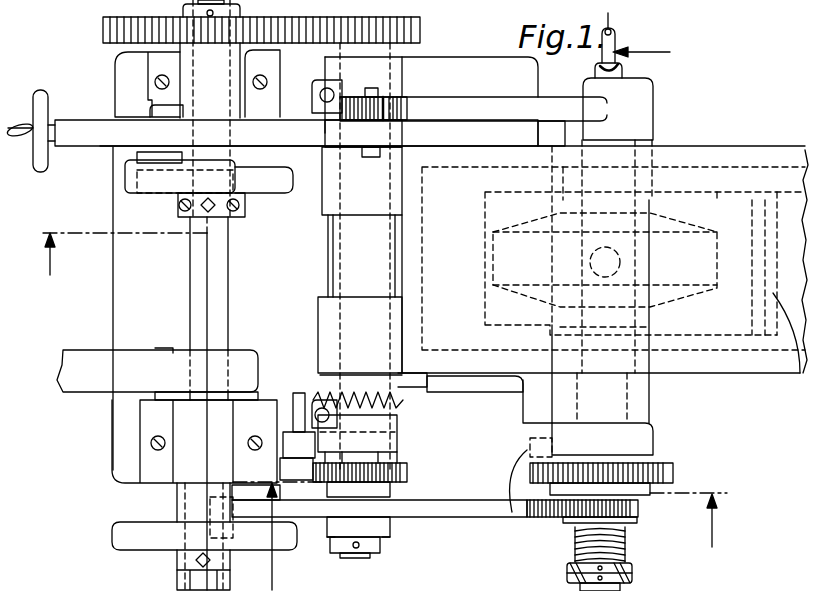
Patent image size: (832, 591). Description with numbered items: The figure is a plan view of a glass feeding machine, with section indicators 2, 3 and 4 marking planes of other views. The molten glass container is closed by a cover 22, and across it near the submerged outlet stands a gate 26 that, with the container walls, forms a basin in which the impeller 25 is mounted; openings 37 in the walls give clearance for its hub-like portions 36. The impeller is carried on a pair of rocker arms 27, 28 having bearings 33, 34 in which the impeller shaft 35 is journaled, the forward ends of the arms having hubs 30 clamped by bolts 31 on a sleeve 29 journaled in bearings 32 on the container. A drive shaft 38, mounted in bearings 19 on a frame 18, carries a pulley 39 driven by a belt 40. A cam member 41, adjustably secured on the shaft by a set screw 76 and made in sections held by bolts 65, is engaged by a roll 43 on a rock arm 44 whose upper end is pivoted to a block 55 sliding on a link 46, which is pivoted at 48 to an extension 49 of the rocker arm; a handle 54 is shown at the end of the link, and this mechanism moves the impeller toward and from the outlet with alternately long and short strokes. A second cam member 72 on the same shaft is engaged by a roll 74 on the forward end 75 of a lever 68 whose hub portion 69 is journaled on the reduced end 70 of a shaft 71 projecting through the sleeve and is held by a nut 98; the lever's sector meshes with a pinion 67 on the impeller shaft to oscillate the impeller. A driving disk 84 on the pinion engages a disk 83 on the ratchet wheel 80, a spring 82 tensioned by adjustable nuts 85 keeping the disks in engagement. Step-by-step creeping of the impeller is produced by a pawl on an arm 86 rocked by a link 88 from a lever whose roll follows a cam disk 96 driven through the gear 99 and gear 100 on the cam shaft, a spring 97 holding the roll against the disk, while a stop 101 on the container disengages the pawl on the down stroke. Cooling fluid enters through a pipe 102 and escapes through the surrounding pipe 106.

The section line 2 is at (115, 242).
The section line 3 is at (646, 43).
The section line 4 is at (483, 536).
The frame 18 is at (113, 293).
The bearings 19 is at (187, 62).
The cover 22 is at (752, 375).
The impeller 25 is at (687, 223).
The gate 26 is at (800, 375).
The rocker arm 27 is at (513, 97).
The rocker arm 28 is at (453, 391).
The sleeve 29 is at (327, 65).
The hubs 30 is at (402, 72).
The bolts 31 is at (320, 97).
The bearings 32 is at (322, 202).
The bearing 33 is at (655, 100).
The bearing 34 is at (649, 402).
The shaft 35 is at (640, 157).
The hub-like portions 36 is at (653, 163).
The openings 37 is at (665, 180).
The shaft 38 is at (190, 297).
The pulley 39 is at (170, 348).
The belt 40 is at (140, 350).
The cam member 41 is at (245, 210).
The roll 43 is at (150, 170).
The rock arm 44 is at (150, 110).
The link 46 is at (292, 146).
The pivot 48 is at (380, 160).
The extension 49 is at (403, 95).
The handle 54 is at (38, 167).
The block 55 is at (110, 150).
The bolts 65 is at (180, 207).
The pinion 67 is at (625, 508).
The lever 68 is at (485, 517).
The hub portion 69 is at (390, 537).
The reduced end 70 is at (370, 527).
The shaft 71 is at (340, 257).
The cam member 72 is at (113, 528).
The roll 74 is at (208, 523).
The forward end 75 is at (312, 518).
The set screw 76 is at (207, 212).
The ratchet wheel 80 is at (673, 472).
The spring 82 is at (625, 542).
The disk 83 is at (633, 488).
The driving disk 84 is at (560, 510).
The adjustable nuts 85 is at (632, 580).
The arm 86 is at (653, 435).
The link 88 is at (470, 440).
The cam disk 96 is at (410, 475).
The spring 97 is at (340, 380).
The nut 98 is at (370, 553).
The gear 99 is at (418, 34).
The gear 100 is at (262, 18).
The stop 101 is at (510, 490).
The pipe 102 is at (615, 30).
The pipe 106 is at (622, 70).